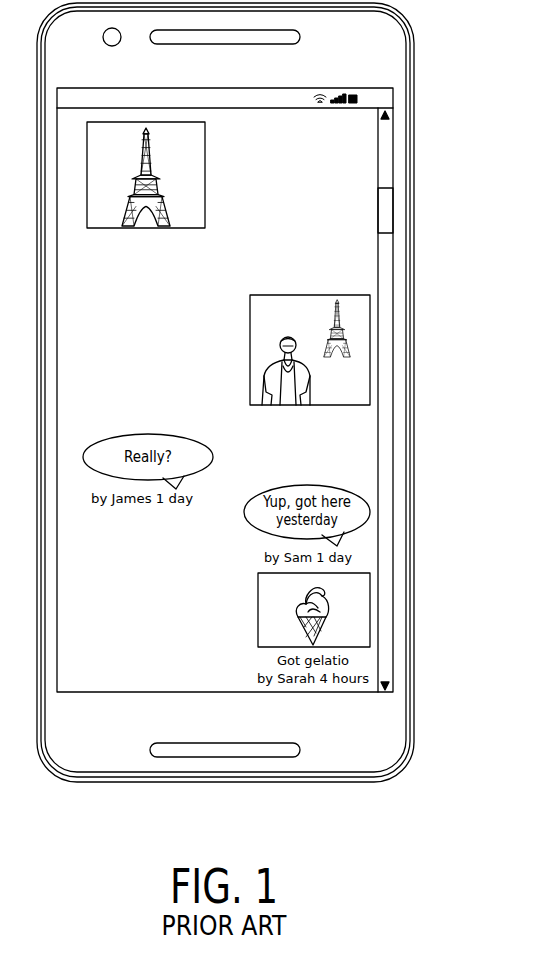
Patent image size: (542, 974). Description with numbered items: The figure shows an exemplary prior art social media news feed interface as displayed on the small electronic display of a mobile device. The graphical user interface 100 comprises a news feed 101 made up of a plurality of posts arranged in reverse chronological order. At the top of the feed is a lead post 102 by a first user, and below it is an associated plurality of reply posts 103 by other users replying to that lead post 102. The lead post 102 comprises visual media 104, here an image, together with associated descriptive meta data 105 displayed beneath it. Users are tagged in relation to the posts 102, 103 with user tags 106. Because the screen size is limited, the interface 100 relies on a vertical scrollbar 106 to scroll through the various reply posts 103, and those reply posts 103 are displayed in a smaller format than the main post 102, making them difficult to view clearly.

The graphical user interface 100 is at (422, 152).
The news feed 101 is at (298, 197).
The lead post 102 is at (186, 198).
The reply posts 103 is at (322, 285).
The visual media 104 is at (207, 207).
The descriptive meta data 105 is at (186, 236).
The user tags / vertical scrollbar 106 is at (197, 263).